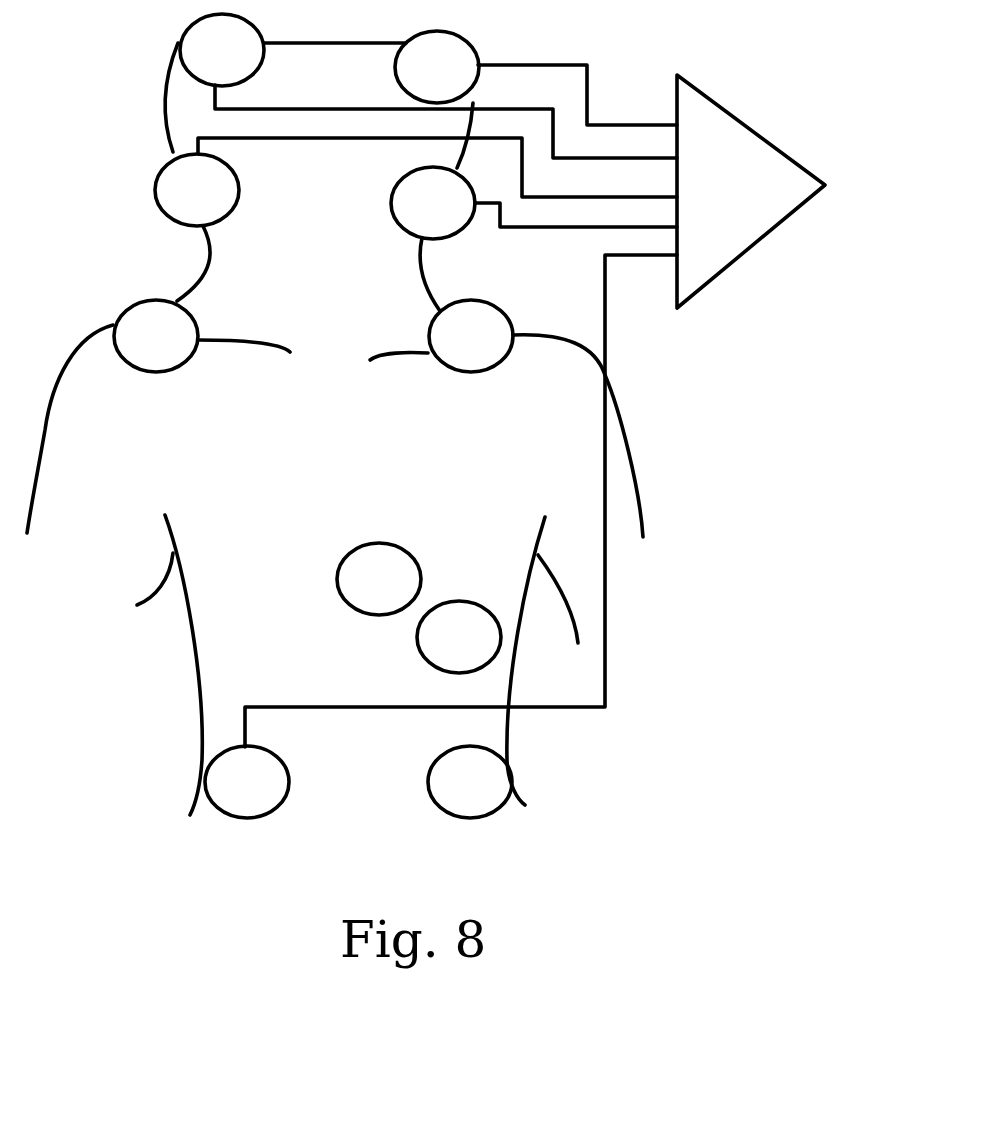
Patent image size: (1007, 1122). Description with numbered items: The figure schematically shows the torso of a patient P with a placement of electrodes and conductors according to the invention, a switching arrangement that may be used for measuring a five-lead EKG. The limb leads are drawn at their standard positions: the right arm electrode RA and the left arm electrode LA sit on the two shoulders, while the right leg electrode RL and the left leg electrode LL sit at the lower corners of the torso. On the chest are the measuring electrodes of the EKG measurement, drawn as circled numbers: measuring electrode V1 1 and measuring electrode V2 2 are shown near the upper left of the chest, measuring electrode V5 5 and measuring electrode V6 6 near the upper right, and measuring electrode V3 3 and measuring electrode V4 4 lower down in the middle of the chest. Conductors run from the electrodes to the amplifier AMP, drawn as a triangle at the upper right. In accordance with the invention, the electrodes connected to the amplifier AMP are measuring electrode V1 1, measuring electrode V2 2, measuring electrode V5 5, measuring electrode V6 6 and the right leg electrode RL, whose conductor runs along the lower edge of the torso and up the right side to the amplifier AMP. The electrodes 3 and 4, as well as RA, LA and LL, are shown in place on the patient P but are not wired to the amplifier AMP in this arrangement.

The measuring electrode V1 1 is at (197, 190).
The measuring electrode V2 2 is at (222, 50).
The measuring electrode V3 3 is at (379, 579).
The measuring electrode V4 4 is at (459, 637).
The measuring electrode V5 5 is at (437, 67).
The measuring electrode V6 6 is at (433, 203).
The right arm electrode RA is at (156, 336).
The left arm electrode LA is at (471, 336).
The right leg electrode RL is at (247, 782).
The left leg electrode LL is at (470, 782).
The patient P is at (198, 693).
The amplifier AMP is at (730, 112).